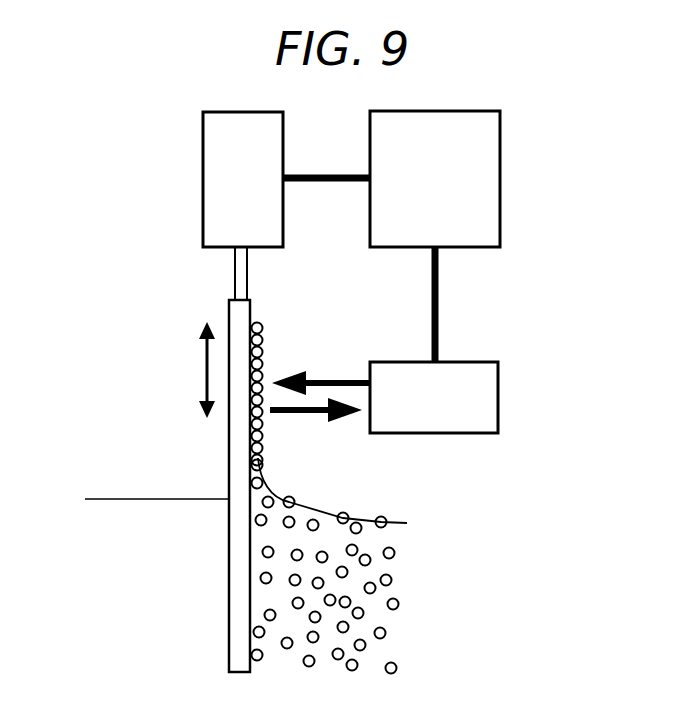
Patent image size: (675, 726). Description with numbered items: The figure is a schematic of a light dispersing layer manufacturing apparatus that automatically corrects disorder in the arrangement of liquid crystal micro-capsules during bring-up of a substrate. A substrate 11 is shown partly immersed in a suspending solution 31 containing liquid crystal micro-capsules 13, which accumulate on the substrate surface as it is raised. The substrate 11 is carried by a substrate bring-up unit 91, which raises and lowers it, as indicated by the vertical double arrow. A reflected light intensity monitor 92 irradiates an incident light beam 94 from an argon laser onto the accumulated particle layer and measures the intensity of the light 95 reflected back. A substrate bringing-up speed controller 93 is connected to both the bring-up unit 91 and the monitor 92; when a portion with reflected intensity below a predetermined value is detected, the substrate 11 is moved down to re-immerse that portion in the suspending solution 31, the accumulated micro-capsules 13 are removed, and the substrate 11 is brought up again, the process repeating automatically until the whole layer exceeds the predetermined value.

The substrate bring-up unit 91 is at (210, 146).
The reflected light intensity monitor 92 is at (490, 398).
The substrate bringing-up speed controller 93 is at (490, 218).
The incident light beam 94 is at (321, 377).
The reflected light 95 is at (316, 419).
The substrate 11 is at (230, 490).
The liquid crystal micro-capsules 13 is at (297, 497).
The suspending solution 31 is at (403, 537).